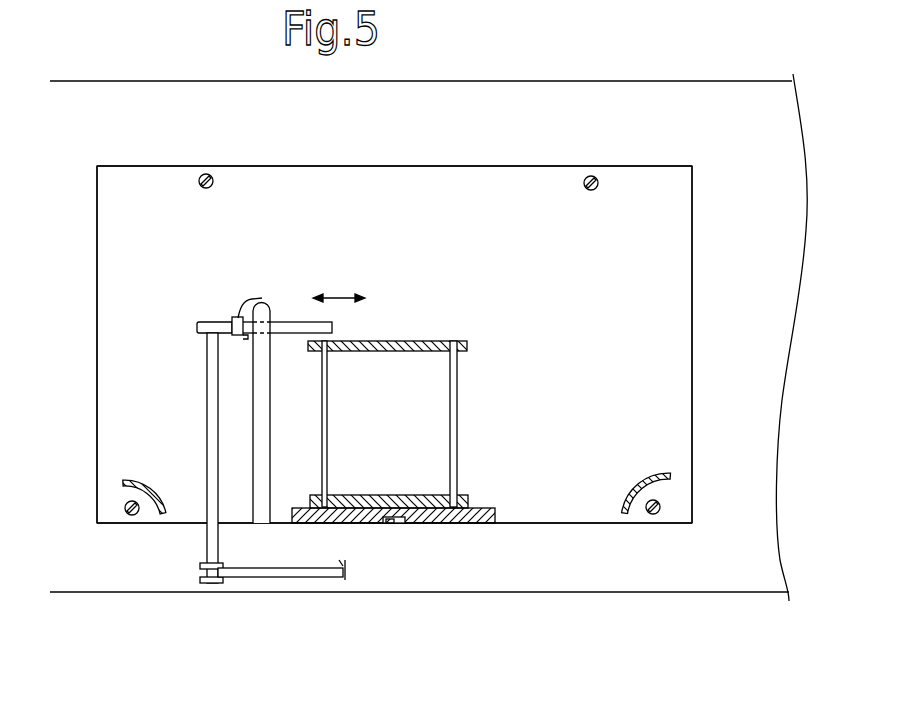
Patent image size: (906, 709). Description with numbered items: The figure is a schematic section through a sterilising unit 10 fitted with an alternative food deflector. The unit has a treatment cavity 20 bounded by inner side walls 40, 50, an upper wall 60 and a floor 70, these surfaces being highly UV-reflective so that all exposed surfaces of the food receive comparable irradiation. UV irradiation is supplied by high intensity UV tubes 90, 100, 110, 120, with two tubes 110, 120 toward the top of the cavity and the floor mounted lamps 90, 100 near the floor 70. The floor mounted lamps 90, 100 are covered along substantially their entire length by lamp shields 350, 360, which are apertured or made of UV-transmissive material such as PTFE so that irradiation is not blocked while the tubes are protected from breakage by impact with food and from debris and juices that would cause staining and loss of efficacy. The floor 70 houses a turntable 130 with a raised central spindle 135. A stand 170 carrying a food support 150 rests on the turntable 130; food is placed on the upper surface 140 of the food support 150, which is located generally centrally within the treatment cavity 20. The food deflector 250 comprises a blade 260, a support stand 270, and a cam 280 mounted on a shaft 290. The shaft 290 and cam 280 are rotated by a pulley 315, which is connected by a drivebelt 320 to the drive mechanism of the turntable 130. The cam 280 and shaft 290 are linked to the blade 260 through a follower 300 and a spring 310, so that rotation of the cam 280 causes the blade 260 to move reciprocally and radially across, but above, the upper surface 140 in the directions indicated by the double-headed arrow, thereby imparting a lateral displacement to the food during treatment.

The sterilising unit 10 is at (755, 155).
The treatment cavity 20 is at (615, 383).
The inner side wall 40 is at (97, 225).
The inner side wall 50 is at (690, 337).
The upper wall 60 is at (462, 166).
The floor 70 is at (553, 522).
The UV tube 90 is at (125, 510).
The UV tube 100 is at (661, 507).
The UV tube 110 is at (586, 182).
The UV tube 120 is at (203, 178).
The turntable 130 is at (460, 525).
The raised central spindle 135 is at (393, 525).
The upper surface 140 is at (422, 341).
The food support 150 is at (447, 341).
The stand 170 is at (457, 402).
The food deflector 250 is at (204, 312).
The blade 260 is at (334, 323).
The support stand 270 is at (253, 410).
The cam 280 is at (198, 332).
The shaft 290 is at (210, 453).
The follower 300 is at (262, 298).
The spring 310 is at (240, 337).
The pulley 315 is at (208, 590).
The drivebelt 320 is at (274, 574).
The lamp shield 350 is at (671, 475).
The lamp shield 360 is at (122, 483).